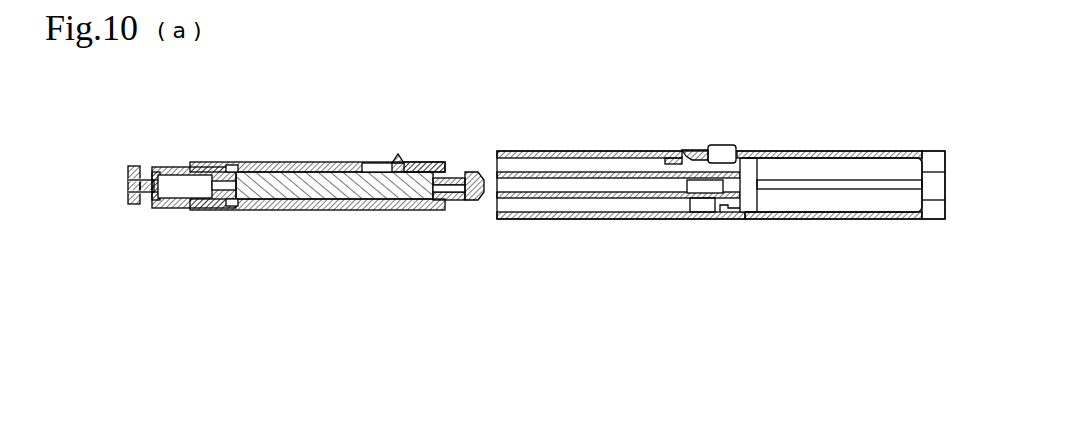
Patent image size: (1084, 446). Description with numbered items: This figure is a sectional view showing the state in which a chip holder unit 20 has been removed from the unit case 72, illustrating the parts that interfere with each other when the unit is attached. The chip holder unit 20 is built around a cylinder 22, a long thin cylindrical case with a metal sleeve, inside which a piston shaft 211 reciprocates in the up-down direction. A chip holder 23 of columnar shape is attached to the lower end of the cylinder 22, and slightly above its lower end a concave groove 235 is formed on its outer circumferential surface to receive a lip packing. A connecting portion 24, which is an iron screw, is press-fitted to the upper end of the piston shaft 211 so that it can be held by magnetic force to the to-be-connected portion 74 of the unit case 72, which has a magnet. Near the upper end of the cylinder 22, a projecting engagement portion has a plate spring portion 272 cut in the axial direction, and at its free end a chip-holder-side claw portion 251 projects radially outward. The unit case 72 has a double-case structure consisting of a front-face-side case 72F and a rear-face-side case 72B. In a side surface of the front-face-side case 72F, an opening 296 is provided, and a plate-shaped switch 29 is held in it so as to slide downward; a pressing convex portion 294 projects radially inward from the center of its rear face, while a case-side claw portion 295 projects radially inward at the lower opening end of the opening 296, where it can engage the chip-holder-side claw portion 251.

The chip holder unit 20 is at (214, 264).
The concave groove 235 is at (150, 206).
The chip holder 23 is at (163, 204).
The cylinder 22 is at (238, 210).
The piston shaft 211 is at (305, 198).
The chip-holder-side claw portion 251 is at (398, 158).
The plate spring portion 272 is at (430, 162).
The connecting portion 24 is at (473, 202).
The unit case 72 is at (850, 123).
The front-face-side case 72F is at (806, 151).
The rear-face-side case 72B is at (851, 219).
The to-be-connected portion 74 is at (938, 219).
The switch 29 is at (720, 147).
The case-side claw portion 295 is at (670, 160).
The pressing convex portion 294 is at (703, 216).
The opening 296 is at (725, 214).